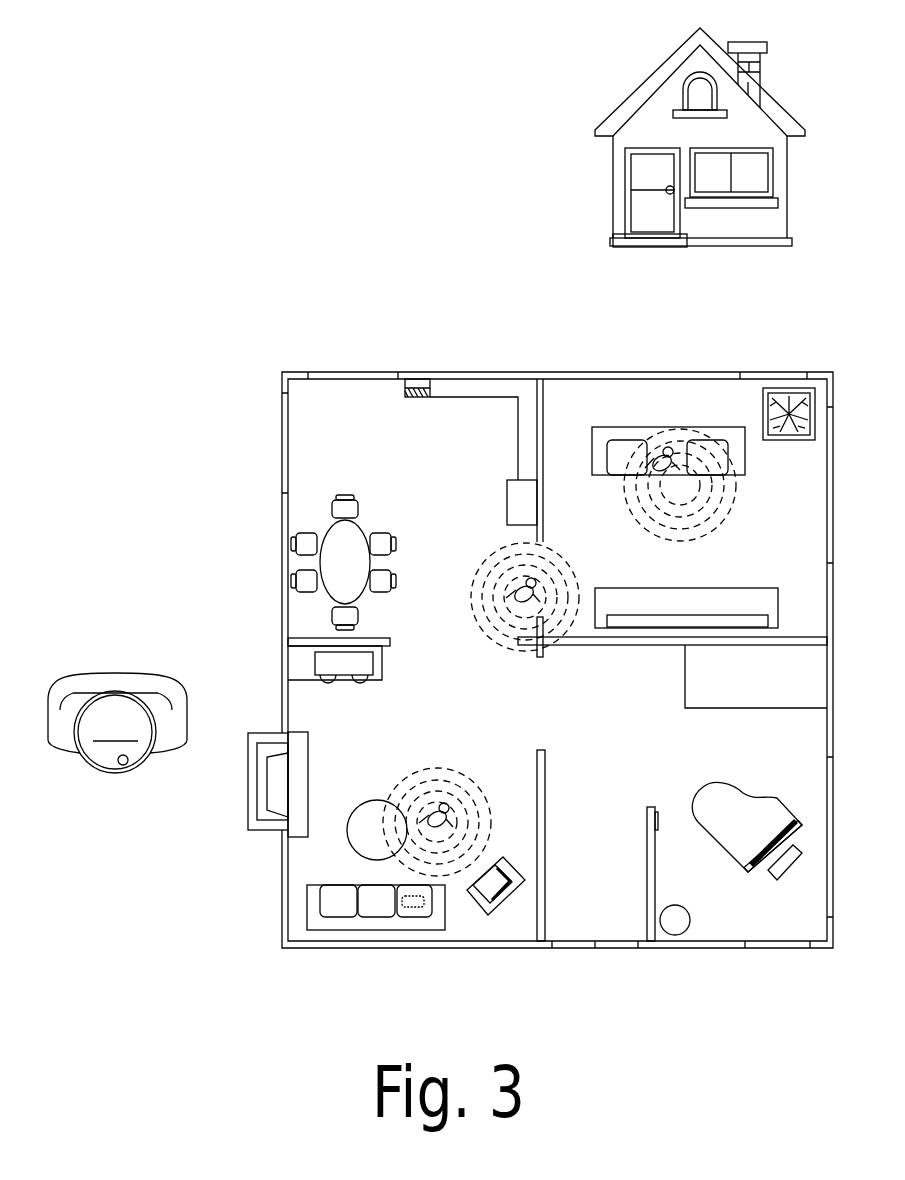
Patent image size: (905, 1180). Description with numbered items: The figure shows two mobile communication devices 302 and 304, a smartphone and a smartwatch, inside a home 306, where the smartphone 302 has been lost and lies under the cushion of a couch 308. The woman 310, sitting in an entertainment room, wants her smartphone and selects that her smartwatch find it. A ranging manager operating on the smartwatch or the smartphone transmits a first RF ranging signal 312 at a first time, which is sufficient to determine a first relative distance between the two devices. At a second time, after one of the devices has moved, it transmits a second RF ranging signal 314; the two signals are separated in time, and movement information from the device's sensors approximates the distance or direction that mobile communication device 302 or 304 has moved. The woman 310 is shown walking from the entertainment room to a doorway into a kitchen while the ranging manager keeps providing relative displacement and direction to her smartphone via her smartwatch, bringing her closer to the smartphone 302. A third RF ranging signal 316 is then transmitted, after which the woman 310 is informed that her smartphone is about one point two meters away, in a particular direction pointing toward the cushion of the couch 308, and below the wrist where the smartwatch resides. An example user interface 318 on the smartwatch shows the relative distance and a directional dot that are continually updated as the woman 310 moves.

The mobile communication device 302 is at (415, 907).
The mobile communication device 304 is at (681, 475).
The home 306 is at (576, 55).
The couch 308 is at (395, 917).
The woman 310 is at (641, 432).
The first RF ranging signal 312 is at (718, 564).
The second RF ranging signal 314 is at (470, 656).
The third RF ranging signal 316 is at (513, 781).
The user interface 318 is at (93, 755).